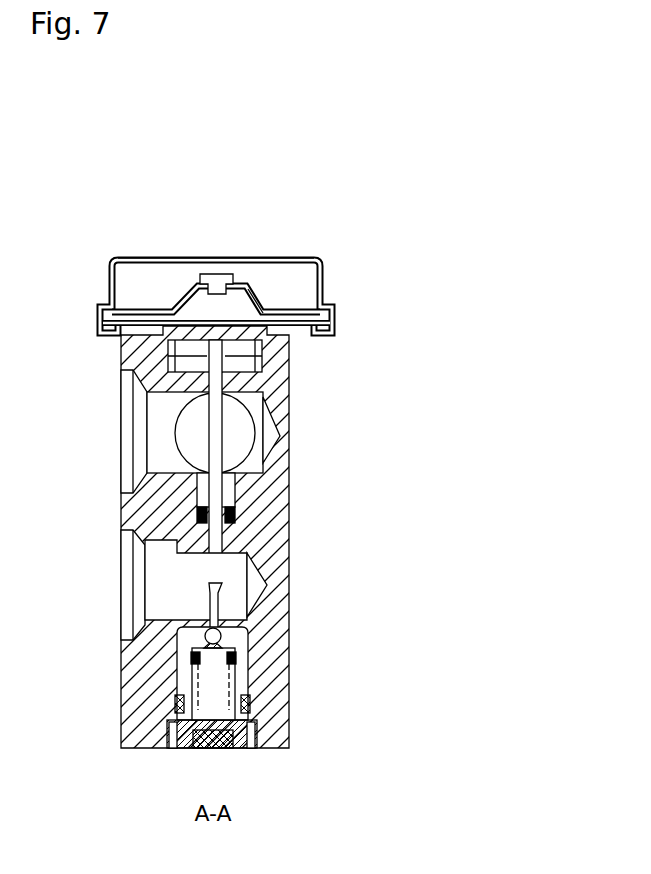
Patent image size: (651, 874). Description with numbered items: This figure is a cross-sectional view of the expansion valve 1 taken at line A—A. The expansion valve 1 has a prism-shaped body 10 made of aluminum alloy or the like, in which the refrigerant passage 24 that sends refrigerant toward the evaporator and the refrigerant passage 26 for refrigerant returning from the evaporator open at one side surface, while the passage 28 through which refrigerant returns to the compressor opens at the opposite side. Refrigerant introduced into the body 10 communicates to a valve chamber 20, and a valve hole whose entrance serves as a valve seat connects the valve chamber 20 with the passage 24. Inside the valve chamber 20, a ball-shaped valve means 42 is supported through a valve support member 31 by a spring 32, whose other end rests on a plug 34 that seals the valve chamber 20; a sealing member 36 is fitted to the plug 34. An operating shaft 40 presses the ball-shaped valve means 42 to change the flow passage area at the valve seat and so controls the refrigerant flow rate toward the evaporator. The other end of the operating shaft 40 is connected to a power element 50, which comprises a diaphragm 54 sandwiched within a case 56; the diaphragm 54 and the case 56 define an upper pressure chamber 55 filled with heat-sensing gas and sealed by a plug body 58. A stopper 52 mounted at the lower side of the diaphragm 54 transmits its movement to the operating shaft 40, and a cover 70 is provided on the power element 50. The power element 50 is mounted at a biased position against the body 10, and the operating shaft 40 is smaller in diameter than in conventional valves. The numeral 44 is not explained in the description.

The expansion valve 1 is at (319, 141).
The body 10 is at (270, 542).
The valve chamber 20 is at (240, 688).
The refrigerant passage 24 is at (152, 609).
The refrigerant passage 26 is at (155, 420).
The passage 28 is at (245, 442).
The valve support member 31 is at (238, 652).
The spring 32 is at (195, 670).
The plug 34 is at (183, 747).
The sealing member 36 is at (172, 712).
The operating shaft 40 is at (210, 571).
The ball-shaped valve means 42 is at (222, 634).
The shaft 44 is at (242, 512).
The power element 50 is at (259, 271).
The stopper 52 is at (178, 350).
The diaphragm 54 is at (142, 314).
The upper pressure chamber 55 is at (242, 305).
The case 56 is at (160, 307).
The plug body 58 is at (208, 270).
The cover 70 is at (240, 257).